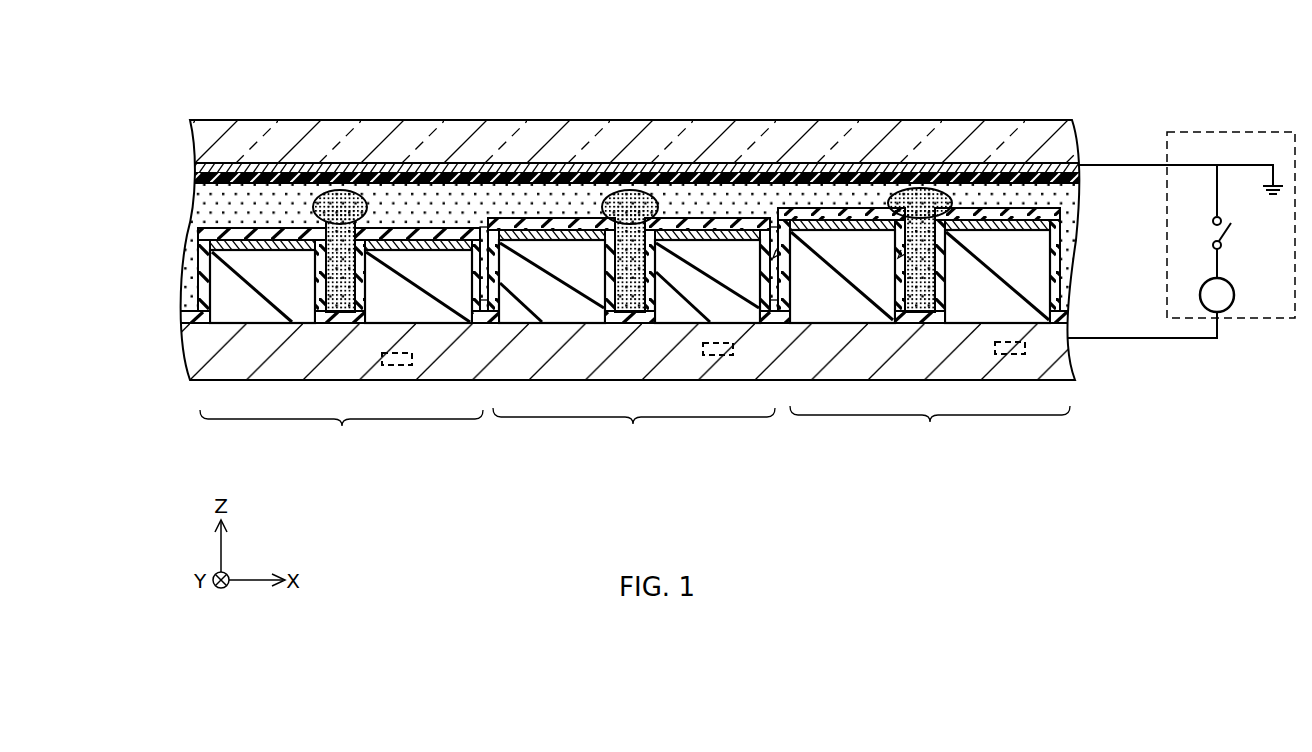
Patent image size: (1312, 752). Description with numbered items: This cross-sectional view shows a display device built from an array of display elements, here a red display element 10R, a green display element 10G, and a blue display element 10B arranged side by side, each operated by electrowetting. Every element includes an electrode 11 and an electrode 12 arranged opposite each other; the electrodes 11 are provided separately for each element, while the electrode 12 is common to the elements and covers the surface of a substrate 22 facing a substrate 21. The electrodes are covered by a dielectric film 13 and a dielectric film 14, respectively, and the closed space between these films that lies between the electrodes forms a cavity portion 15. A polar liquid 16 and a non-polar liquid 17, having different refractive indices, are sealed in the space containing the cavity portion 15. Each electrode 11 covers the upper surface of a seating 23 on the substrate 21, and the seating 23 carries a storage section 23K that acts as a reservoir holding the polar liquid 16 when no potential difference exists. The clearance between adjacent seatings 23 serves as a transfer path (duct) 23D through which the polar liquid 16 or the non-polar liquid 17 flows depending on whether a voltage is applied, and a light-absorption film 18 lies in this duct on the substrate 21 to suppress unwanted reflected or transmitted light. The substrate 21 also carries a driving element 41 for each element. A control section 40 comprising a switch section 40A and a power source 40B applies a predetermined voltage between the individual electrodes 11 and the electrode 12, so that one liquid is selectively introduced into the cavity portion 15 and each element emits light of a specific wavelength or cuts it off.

The blue display element 10B is at (341, 435).
The green display element 10G is at (634, 432).
The red display element 10R is at (930, 430).
The electrode 11 is at (520, 233).
The electrode 12 is at (697, 188).
The dielectric film 13 is at (973, 210).
The dielectric film 14 is at (1034, 178).
The cavity portion 15 is at (258, 172).
The polar liquid 16 is at (590, 190).
The non-polar liquid 17 is at (850, 200).
The light-absorption film 18 is at (757, 305).
The substrate 21 is at (388, 337).
The substrate 22 is at (480, 150).
The seating 23 is at (433, 268).
The storage section 23K is at (330, 210).
The transfer path (duct) 23D is at (779, 252).
The control section 40 is at (1256, 320).
The switch section 40A is at (1205, 229).
The power source 40B is at (1200, 295).
The driving element 41 is at (1030, 345).